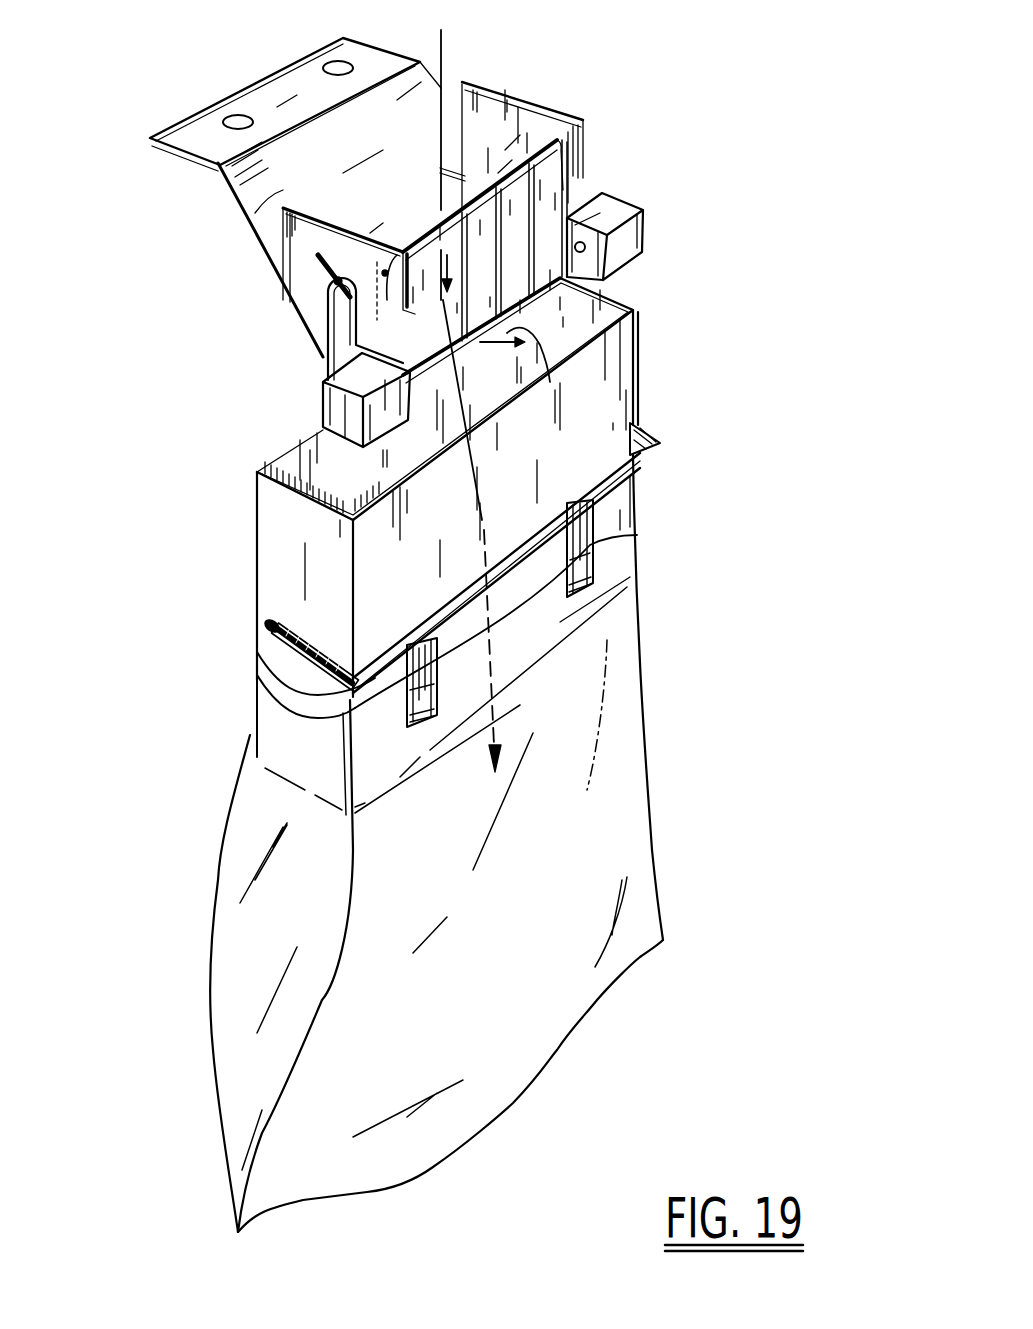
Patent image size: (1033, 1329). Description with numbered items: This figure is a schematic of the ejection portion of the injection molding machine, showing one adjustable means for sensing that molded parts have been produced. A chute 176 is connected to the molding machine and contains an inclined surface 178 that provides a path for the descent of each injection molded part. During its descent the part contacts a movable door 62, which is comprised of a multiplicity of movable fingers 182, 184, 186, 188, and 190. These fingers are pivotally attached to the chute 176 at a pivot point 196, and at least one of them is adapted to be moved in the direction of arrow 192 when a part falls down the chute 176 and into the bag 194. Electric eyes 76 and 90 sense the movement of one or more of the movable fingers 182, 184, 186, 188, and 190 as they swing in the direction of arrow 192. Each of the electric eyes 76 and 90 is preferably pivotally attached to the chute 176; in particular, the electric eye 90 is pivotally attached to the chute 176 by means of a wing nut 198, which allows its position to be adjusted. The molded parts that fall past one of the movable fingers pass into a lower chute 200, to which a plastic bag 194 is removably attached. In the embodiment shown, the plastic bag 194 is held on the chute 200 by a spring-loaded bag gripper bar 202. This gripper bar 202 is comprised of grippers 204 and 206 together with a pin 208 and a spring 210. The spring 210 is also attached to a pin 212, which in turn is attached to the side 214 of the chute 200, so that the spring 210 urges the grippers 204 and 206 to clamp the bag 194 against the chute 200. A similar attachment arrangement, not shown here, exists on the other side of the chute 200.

The movable door 62 is at (567, 158).
The electric eye 76 is at (645, 242).
The electric eye 90 is at (325, 410).
The chute 176 is at (226, 198).
The inclined surface 178 is at (258, 210).
The movable finger 182 is at (548, 133).
The movable finger 184 is at (490, 185).
The movable finger 186 is at (500, 218).
The movable finger 188 is at (408, 238).
The movable finger 190 is at (410, 245).
The arrow 192 is at (548, 380).
The plastic bag 194 is at (230, 967).
The pivot point 196 is at (325, 302).
The wing nut 198 is at (320, 260).
The chute 200 is at (258, 501).
The spring-loaded bag gripper bar 202 is at (653, 433).
The gripper 204 is at (438, 685).
The gripper 206 is at (593, 562).
The pin 208 is at (257, 652).
The spring 210 is at (298, 620).
The pin 212 is at (272, 625).
The side 214 is at (275, 536).